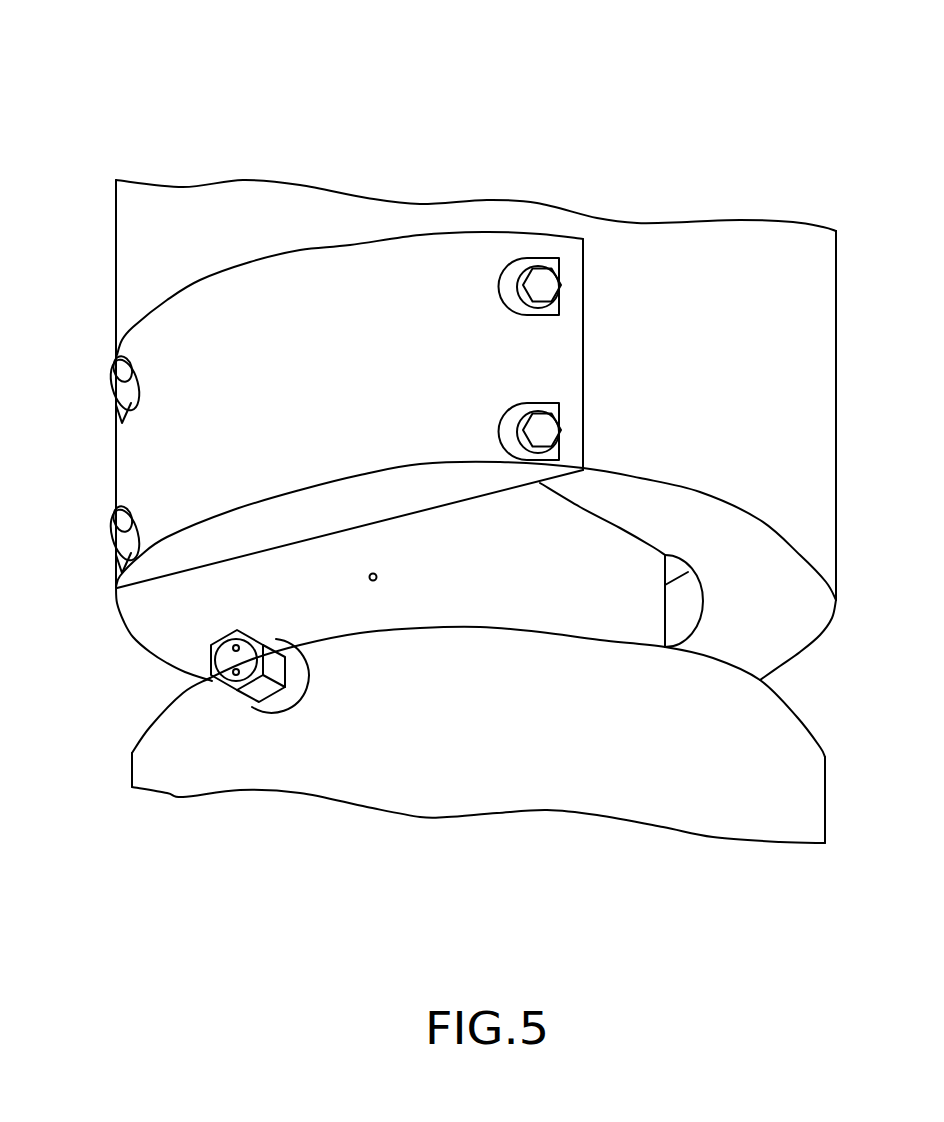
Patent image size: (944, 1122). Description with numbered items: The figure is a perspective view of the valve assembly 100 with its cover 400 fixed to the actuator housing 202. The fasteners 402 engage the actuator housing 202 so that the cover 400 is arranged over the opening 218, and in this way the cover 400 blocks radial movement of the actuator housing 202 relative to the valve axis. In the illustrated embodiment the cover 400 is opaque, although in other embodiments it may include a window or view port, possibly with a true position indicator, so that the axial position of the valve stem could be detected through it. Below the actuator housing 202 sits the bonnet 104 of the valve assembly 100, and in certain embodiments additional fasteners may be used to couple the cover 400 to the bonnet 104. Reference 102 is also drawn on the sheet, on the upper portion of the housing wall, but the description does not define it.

The valve assembly 100 is at (808, 190).
The pipe side wall 102 is at (681, 185).
The bonnet 104 is at (657, 752).
The actuator housing 202 is at (797, 438).
The opening 218 is at (557, 185).
The cover 400 is at (130, 457).
The fasteners 402 is at (123, 385).